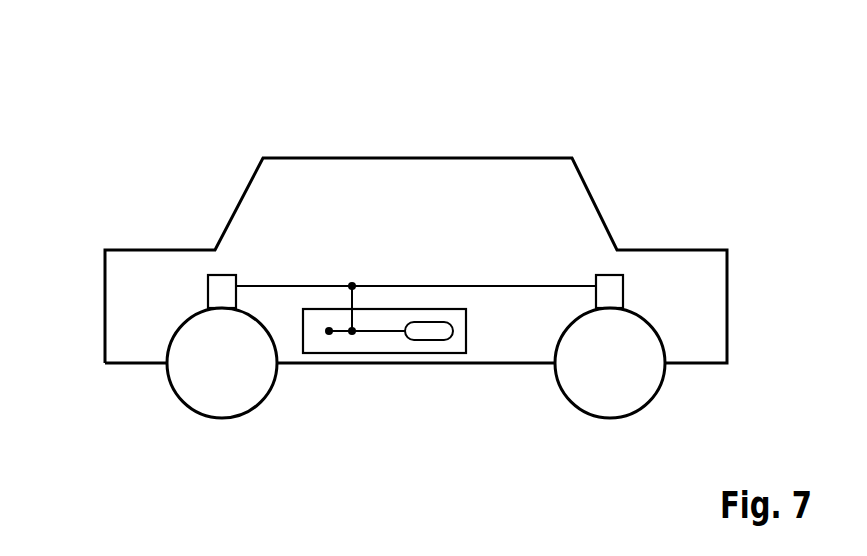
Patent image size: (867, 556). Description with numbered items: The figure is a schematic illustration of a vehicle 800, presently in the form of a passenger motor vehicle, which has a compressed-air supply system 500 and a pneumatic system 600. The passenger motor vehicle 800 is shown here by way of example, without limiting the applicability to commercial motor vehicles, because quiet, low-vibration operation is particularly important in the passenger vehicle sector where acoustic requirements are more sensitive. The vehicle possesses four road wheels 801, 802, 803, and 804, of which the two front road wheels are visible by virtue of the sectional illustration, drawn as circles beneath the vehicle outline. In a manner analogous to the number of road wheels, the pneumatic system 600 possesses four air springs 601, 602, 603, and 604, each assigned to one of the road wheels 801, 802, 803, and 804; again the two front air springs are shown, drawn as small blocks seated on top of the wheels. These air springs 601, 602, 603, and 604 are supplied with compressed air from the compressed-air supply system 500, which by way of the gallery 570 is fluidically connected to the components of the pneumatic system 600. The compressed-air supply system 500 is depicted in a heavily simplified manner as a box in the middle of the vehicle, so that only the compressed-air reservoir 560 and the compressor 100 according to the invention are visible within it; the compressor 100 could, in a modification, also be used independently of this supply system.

The compressor 100 is at (329, 334).
The compressed-air supply system 500 is at (384, 256).
The compressed-air reservoir 560 is at (432, 341).
The gallery 570 is at (508, 286).
The pneumatic system 600 is at (140, 343).
The air spring 601 is at (197, 227).
The air spring 602 is at (224, 262).
The air spring 603 is at (645, 227).
The air spring 604 is at (610, 262).
The vehicle 800 is at (370, 192).
The road wheel 801 is at (222, 419).
The road wheel 802 is at (225, 432).
The road wheel 803 is at (610, 418).
The road wheel 804 is at (609, 432).